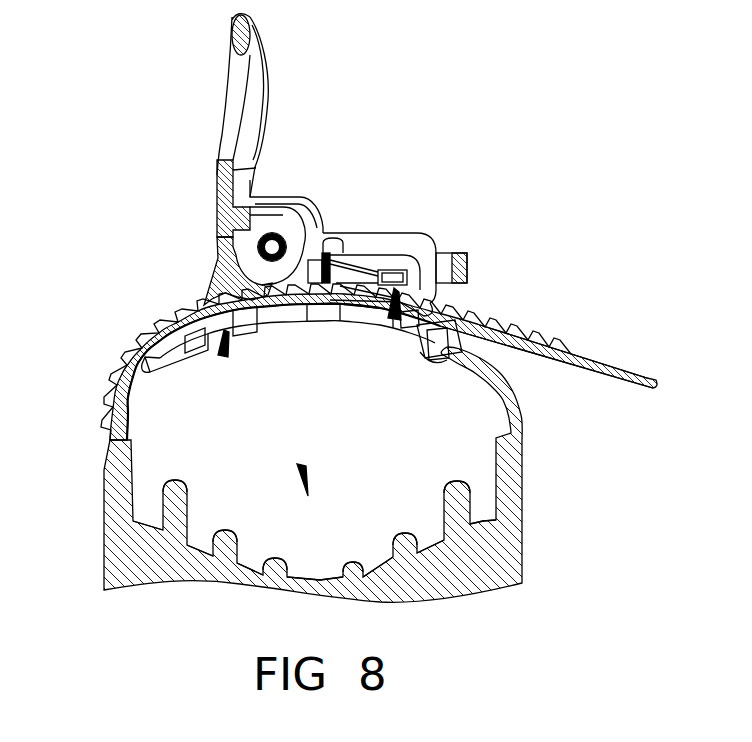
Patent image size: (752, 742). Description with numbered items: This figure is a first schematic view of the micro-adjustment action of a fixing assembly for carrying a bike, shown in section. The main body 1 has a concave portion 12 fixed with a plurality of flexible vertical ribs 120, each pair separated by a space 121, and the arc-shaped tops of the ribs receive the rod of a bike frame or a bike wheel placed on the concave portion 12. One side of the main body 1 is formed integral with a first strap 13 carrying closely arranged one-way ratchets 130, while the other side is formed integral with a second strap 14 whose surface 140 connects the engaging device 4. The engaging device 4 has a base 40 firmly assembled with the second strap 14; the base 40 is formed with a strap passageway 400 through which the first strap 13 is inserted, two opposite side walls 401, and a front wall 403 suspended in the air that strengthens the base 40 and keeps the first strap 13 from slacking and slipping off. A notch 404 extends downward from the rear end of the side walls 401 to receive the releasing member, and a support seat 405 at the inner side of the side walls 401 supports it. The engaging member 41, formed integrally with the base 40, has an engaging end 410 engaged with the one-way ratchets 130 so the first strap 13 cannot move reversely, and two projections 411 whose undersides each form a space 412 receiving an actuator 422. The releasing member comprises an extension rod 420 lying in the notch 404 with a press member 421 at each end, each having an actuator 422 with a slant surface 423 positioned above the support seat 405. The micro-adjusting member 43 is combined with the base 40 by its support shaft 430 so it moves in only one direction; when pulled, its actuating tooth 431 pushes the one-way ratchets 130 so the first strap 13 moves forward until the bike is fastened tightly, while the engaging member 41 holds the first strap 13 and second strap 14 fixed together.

The main body 1 is at (103, 505).
The concave portion 12 is at (303, 468).
The vertical ribs 120 is at (270, 560).
The space 121 is at (230, 580).
The first strap 13 is at (597, 375).
The one-way ratchets 130 is at (553, 335).
The second strap 14 is at (167, 340).
The surface 140 is at (333, 322).
The engaging device 4 is at (217, 277).
The base 40 is at (200, 297).
The strap passageway 400 is at (322, 230).
The side walls 401 is at (292, 203).
The front wall 403 is at (468, 254).
The notch 404 is at (226, 358).
The support seat 405 is at (375, 325).
The engaging member 41 is at (372, 233).
The engaging end 410 is at (450, 297).
The projections 411 is at (412, 256).
The space 412 is at (396, 320).
The extension rod 420 is at (247, 340).
The press member 421 is at (340, 258).
The actuator 422 is at (333, 253).
The slant surface 423 is at (392, 268).
The micro-adjusting member 43 is at (220, 180).
The support shaft 430 is at (273, 207).
The actuating tooth 431 is at (217, 242).